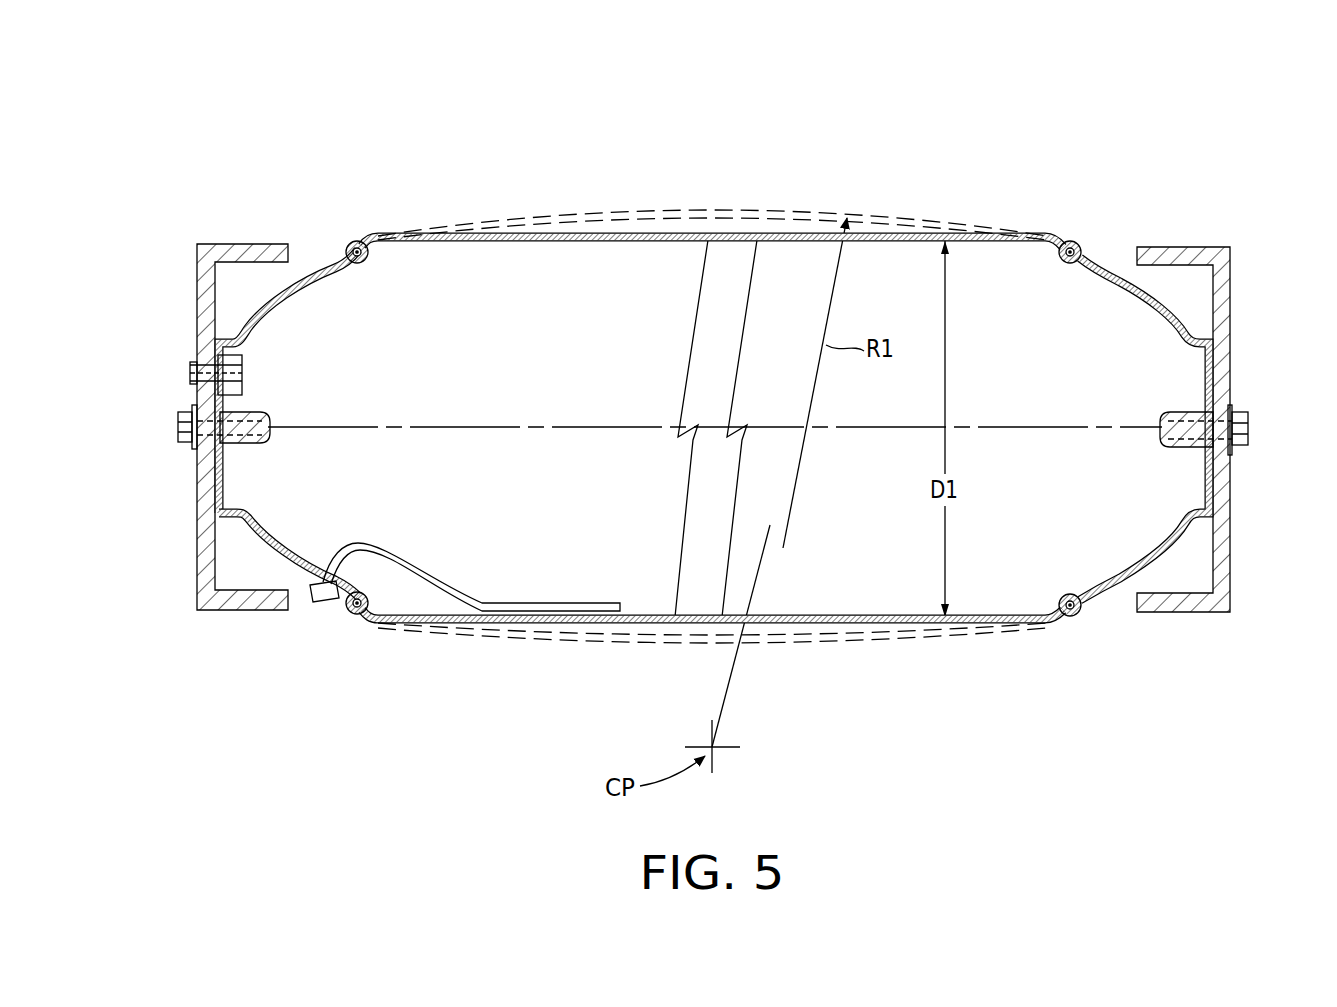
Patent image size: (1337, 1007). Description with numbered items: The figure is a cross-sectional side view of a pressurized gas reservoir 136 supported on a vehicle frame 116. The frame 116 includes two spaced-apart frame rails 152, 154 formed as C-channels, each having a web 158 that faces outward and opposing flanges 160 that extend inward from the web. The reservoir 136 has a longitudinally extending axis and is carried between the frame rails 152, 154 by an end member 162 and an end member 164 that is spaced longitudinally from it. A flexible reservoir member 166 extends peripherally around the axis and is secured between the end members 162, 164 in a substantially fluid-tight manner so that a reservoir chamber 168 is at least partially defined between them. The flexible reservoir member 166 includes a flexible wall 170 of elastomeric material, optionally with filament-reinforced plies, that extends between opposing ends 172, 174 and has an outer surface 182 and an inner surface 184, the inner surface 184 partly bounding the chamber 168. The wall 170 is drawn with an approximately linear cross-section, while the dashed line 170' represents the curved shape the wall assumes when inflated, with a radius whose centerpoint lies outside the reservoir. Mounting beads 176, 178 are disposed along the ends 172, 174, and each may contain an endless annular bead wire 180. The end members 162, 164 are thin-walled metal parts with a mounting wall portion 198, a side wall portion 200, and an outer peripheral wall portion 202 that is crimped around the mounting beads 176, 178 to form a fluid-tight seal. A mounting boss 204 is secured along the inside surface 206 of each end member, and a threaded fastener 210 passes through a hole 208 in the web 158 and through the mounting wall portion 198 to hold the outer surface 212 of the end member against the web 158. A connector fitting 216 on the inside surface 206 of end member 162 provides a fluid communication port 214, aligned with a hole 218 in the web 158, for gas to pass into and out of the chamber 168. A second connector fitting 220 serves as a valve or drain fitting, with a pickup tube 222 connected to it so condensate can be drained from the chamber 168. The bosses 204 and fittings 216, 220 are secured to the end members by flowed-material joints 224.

The frame 116 is at (1190, 215).
The pressurized gas reservoir 136 is at (905, 160).
The frame rail 152 is at (238, 243).
The frame rail 154 is at (1222, 250).
The web 158 is at (206, 565).
The flange 160 is at (268, 252).
The end member 162 is at (248, 280).
The end member 164 is at (1188, 298).
The flexible reservoir member 166 is at (800, 193).
The reservoir chamber 168 is at (612, 270).
The flexible wall 170 is at (712, 211).
The flexible wall in curved condition 170' is at (712, 381).
The end of flexible wall 172 is at (372, 240).
The end of flexible wall 174 is at (1062, 222).
The mounting bead 176 is at (349, 245).
The mounting bead 178 is at (1079, 611).
The bead wire 180 is at (370, 262).
The outer surface 182 is at (578, 232).
The inner surface 184 is at (530, 243).
The mounting wall portion 198 is at (223, 462).
The side wall portion 200 is at (270, 548).
The outer peripheral wall portion 202 is at (363, 243).
The mounting boss 204 is at (272, 437).
The inside surface 206 is at (223, 487).
The hole 208 is at (192, 442).
The threaded fastener 210 is at (188, 414).
The outer surface 212 is at (215, 495).
The fluid communication port 214 is at (244, 371).
The connector fitting 216 is at (242, 352).
The hole 218 is at (203, 371).
The connector fitting 220 is at (318, 604).
The pickup tube 222 is at (390, 558).
The flowed-material joint 224 is at (232, 338).